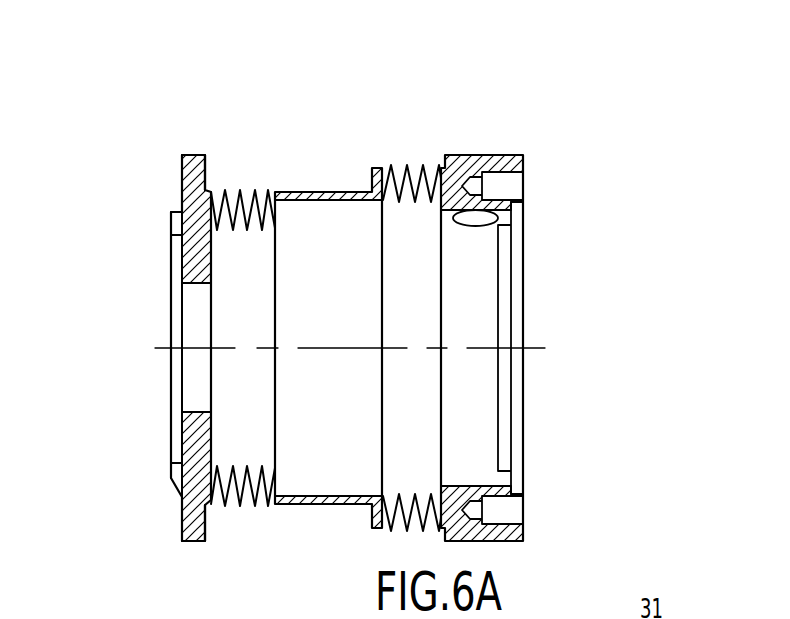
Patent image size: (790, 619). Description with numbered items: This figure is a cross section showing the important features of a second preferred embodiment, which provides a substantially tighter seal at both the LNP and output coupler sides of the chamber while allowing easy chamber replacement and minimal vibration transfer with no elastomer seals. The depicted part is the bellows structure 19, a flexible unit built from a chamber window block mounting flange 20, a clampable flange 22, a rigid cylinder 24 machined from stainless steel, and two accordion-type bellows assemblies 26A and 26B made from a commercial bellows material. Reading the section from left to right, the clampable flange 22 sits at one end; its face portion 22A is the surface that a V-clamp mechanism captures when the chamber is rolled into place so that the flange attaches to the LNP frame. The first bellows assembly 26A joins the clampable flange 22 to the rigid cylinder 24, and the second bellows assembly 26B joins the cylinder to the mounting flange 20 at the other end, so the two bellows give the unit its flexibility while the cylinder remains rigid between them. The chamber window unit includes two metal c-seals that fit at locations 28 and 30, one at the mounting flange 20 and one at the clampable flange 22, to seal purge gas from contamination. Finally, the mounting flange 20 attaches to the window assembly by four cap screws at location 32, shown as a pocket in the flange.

The bellows structure 19 is at (357, 270).
The chamber window block mounting flange 20 is at (543, 304).
The clampable flange 22 is at (140, 304).
The flange face 22A is at (181, 167).
The rigid cylinder 24 is at (322, 190).
The accordion-type bellows assembly 26A is at (259, 168).
The accordion-type bellows assembly 26B is at (422, 147).
The c-seal location 28 is at (545, 215).
The c-seal location 30 is at (139, 212).
The cap screw location 32 is at (545, 185).